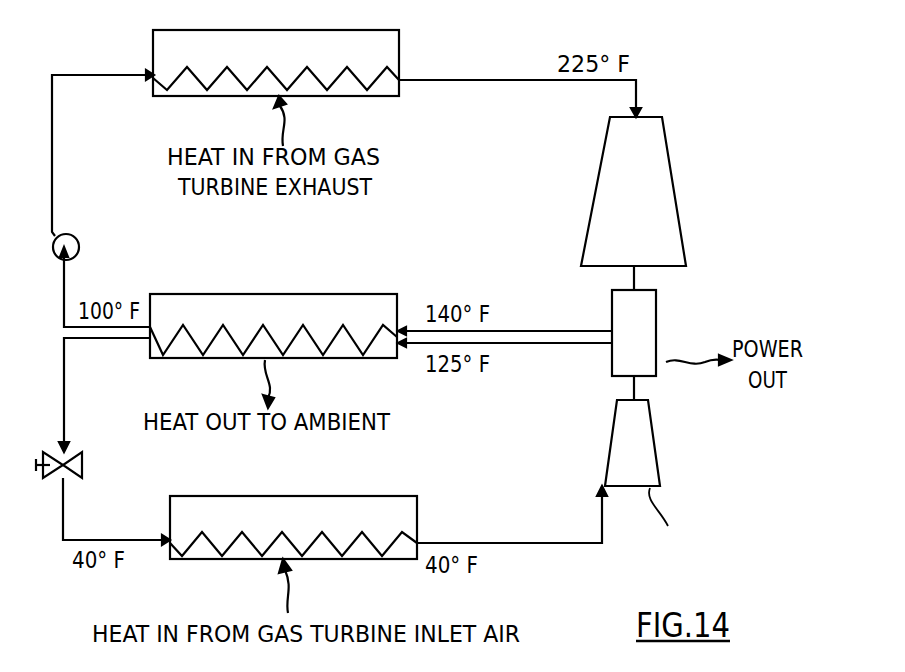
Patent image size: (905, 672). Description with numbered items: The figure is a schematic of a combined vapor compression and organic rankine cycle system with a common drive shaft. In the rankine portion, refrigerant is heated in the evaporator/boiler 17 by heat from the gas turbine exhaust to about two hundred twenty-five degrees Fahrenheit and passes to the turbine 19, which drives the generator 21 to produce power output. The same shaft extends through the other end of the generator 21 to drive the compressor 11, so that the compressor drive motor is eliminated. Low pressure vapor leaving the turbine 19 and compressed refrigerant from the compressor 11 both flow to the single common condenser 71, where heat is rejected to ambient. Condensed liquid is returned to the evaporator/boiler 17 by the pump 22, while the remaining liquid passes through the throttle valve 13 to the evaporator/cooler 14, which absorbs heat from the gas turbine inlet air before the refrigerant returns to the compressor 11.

The evaporator/boiler 17 is at (389, 97).
The turbine 19 is at (645, 154).
The generator 21 is at (610, 364).
The compressor 11 is at (642, 452).
The pump 22 is at (58, 256).
The common condenser 71 is at (291, 293).
The throttle valve 13 is at (56, 480).
The evaporator/cooler 14 is at (203, 561).